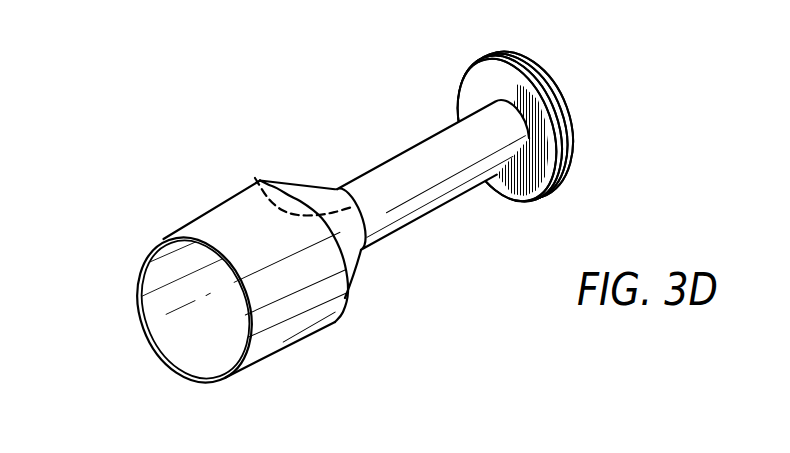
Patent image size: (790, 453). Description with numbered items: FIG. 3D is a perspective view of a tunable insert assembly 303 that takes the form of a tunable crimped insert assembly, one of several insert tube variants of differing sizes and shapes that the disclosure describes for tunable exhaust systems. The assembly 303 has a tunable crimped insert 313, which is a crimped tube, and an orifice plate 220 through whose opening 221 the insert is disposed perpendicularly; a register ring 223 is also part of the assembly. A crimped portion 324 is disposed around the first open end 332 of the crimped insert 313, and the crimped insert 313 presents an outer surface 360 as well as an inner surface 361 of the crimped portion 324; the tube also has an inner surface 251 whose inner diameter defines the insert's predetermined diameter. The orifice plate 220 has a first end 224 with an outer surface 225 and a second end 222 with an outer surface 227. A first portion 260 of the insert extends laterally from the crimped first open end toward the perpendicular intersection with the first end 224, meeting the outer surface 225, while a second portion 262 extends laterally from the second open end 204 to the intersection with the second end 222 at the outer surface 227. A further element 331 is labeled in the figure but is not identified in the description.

The tunable insert assembly 303 is at (297, 246).
The crimped portion 324 is at (233, 290).
The inner surface of the crimped portion 361 is at (195, 309).
The first open end 332 is at (185, 264).
The inner surface 251 is at (256, 166).
The tunable crimped insert 313 is at (431, 174).
The outer surface 360 is at (446, 187).
The first portion 260 is at (305, 248).
The orifice plate 220 is at (511, 56).
The opening 221 is at (493, 84).
The second end 222 is at (533, 63).
The second portion 262 is at (568, 93).
The second open end 204 is at (578, 112).
The outer surface of the second end 227 is at (573, 138).
The register ring 223 is at (574, 152).
The first end 224 is at (567, 173).
The outer surface of the first end 225 is at (545, 167).
The housing portion 331 is at (160, 5).